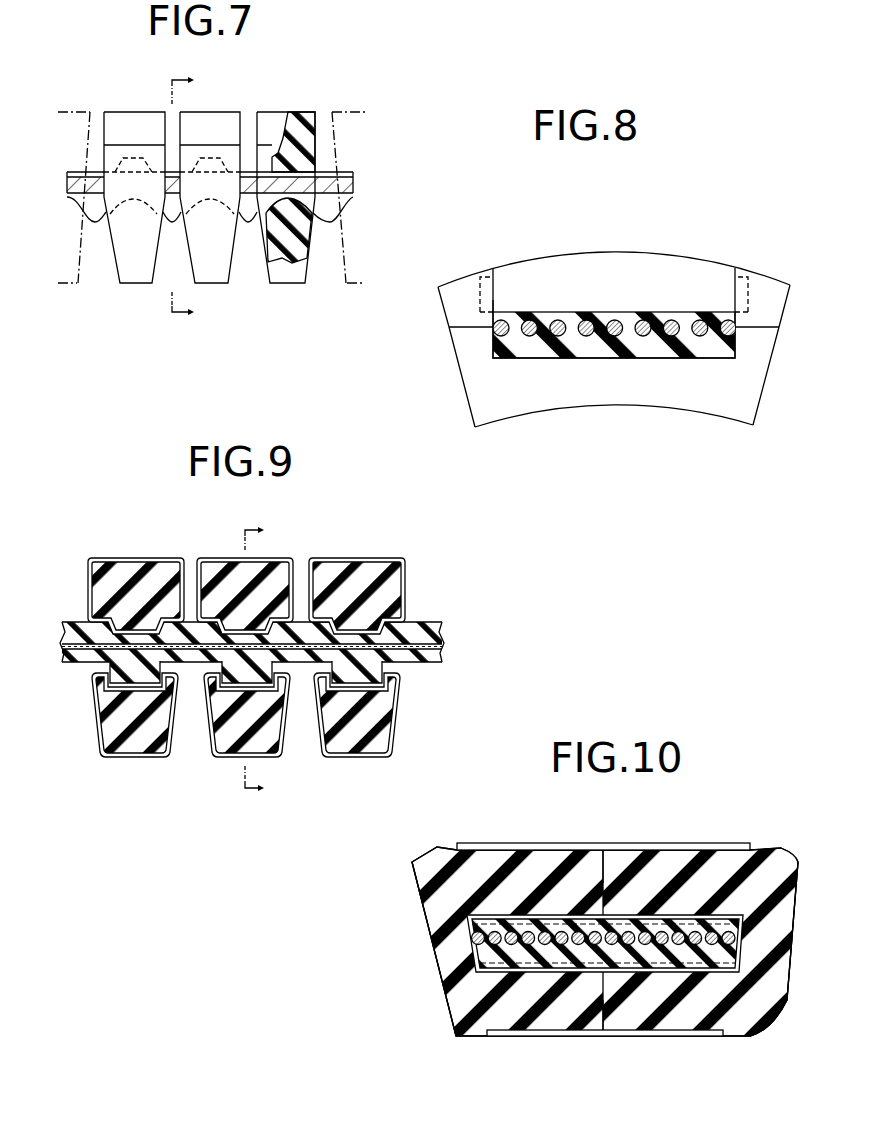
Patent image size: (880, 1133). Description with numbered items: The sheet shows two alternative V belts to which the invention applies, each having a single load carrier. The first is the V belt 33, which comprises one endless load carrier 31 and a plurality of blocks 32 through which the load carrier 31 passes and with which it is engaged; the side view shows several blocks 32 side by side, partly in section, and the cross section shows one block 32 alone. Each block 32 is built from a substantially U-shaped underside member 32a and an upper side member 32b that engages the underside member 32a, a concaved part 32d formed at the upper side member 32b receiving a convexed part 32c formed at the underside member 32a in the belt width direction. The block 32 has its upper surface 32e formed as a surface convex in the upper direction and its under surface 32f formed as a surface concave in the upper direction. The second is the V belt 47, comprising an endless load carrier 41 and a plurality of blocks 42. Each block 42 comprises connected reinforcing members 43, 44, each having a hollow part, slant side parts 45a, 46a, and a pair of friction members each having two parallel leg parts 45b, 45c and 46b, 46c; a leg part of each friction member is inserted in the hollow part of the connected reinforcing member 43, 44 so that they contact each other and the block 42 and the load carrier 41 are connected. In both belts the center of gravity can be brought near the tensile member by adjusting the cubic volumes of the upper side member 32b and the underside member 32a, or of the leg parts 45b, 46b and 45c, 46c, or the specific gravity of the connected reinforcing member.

In FIG. 7, the endless load carrier 31 is at (355, 184).
In FIG. 8, the endless load carrier 31 is at (628, 318).
In FIG. 7, the block 32 is at (137, 112).
In FIG. 8, the block 32 is at (378, 333).
In FIG. 7, the underside member 32a is at (123, 250).
In FIG. 8, the underside member 32a is at (477, 375).
In FIG. 7, the upper side member 32b is at (117, 120).
In FIG. 8, the upper side member 32b is at (455, 312).
In FIG. 8, the convexed part 32c is at (478, 291).
In FIG. 8, the concaved part 32d is at (494, 300).
In FIG. 8, the upper surface 32e is at (633, 253).
In FIG. 8, the under surface 32f is at (603, 406).
In FIG. 7, the V belt 33 is at (316, 59).
In FIG. 8, the V belt 33 is at (704, 170).
In FIG. 9, the endless load carrier 41 is at (433, 622).
In FIG. 10, the endless load carrier 41 is at (470, 938).
In FIG. 9, the block 42 is at (160, 551).
In FIG. 10, the block 42 is at (639, 838).
In FIG. 10, the connected reinforcing member 43 is at (585, 846).
In FIG. 10, the connected reinforcing member 44 is at (583, 1036).
In FIG. 10, the slant side part 45a is at (453, 998).
In FIG. 10, the leg part 45b is at (522, 877).
In FIG. 10, the leg part 45c is at (537, 1023).
In FIG. 10, the slant side part 46a is at (755, 988).
In FIG. 9, the leg part 46b is at (390, 582).
In FIG. 10, the leg part 46b is at (717, 863).
In FIG. 9, the leg part 46c is at (383, 707).
In FIG. 10, the leg part 46c is at (665, 1018).
In FIG. 9, the V belt 47 is at (355, 507).
In FIG. 10, the V belt 47 is at (739, 790).